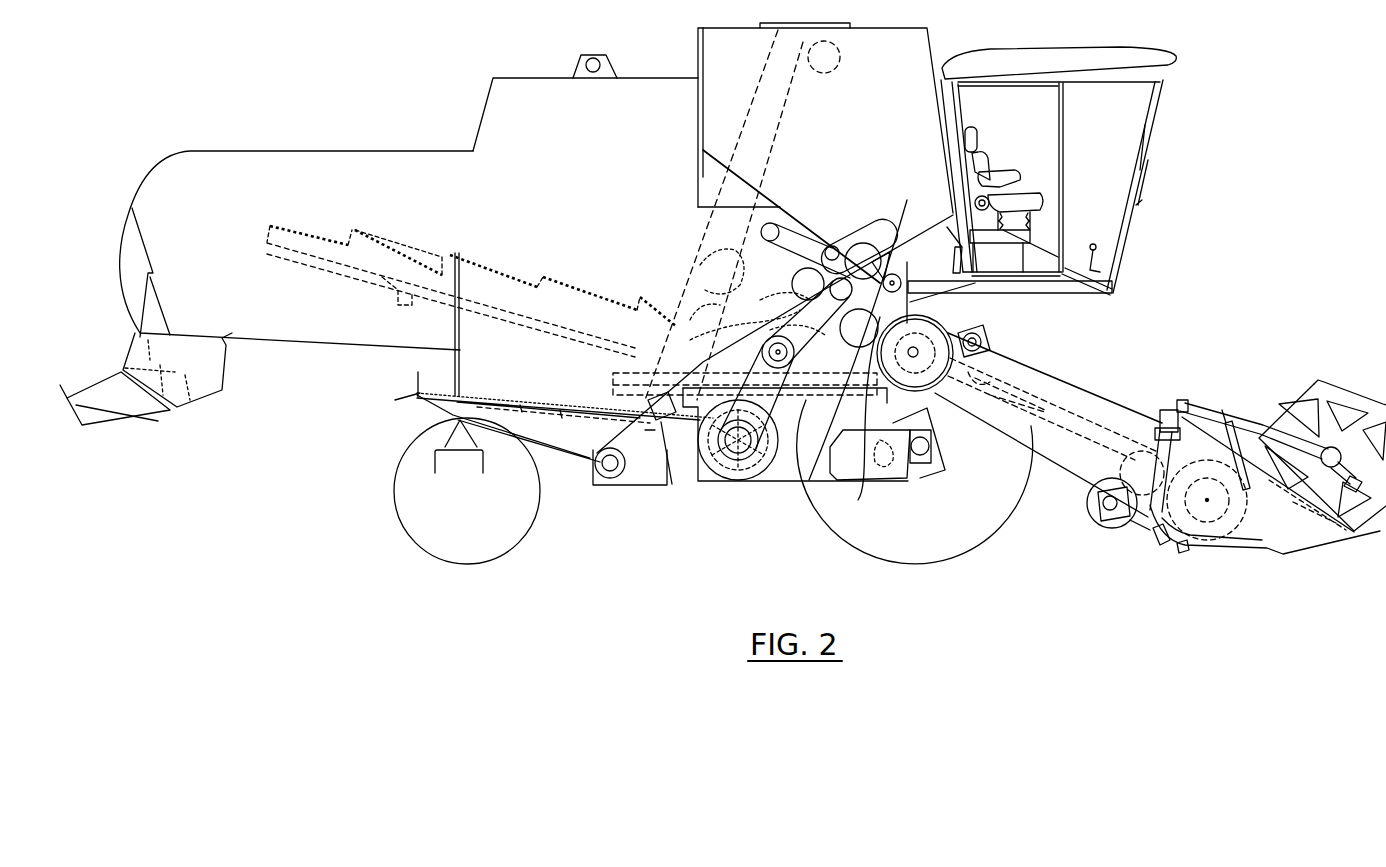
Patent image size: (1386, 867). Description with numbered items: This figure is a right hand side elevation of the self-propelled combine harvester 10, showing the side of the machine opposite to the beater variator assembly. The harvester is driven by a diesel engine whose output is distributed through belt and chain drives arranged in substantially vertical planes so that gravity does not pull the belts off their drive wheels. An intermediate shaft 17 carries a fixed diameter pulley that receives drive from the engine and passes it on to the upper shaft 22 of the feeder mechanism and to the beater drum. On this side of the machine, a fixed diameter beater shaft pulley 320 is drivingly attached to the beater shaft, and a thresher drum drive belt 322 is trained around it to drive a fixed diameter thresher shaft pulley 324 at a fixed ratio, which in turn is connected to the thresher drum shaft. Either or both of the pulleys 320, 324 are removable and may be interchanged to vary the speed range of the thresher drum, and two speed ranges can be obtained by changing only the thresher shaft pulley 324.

The self-propelled combine harvester 10 is at (725, 510).
The intermediate shaft 17 is at (809, 480).
The upper shaft 22 is at (920, 388).
The beater shaft pulley 320 is at (816, 280).
The thresher drum drive belt 322 is at (858, 500).
The thresher shaft pulley 324 is at (860, 328).